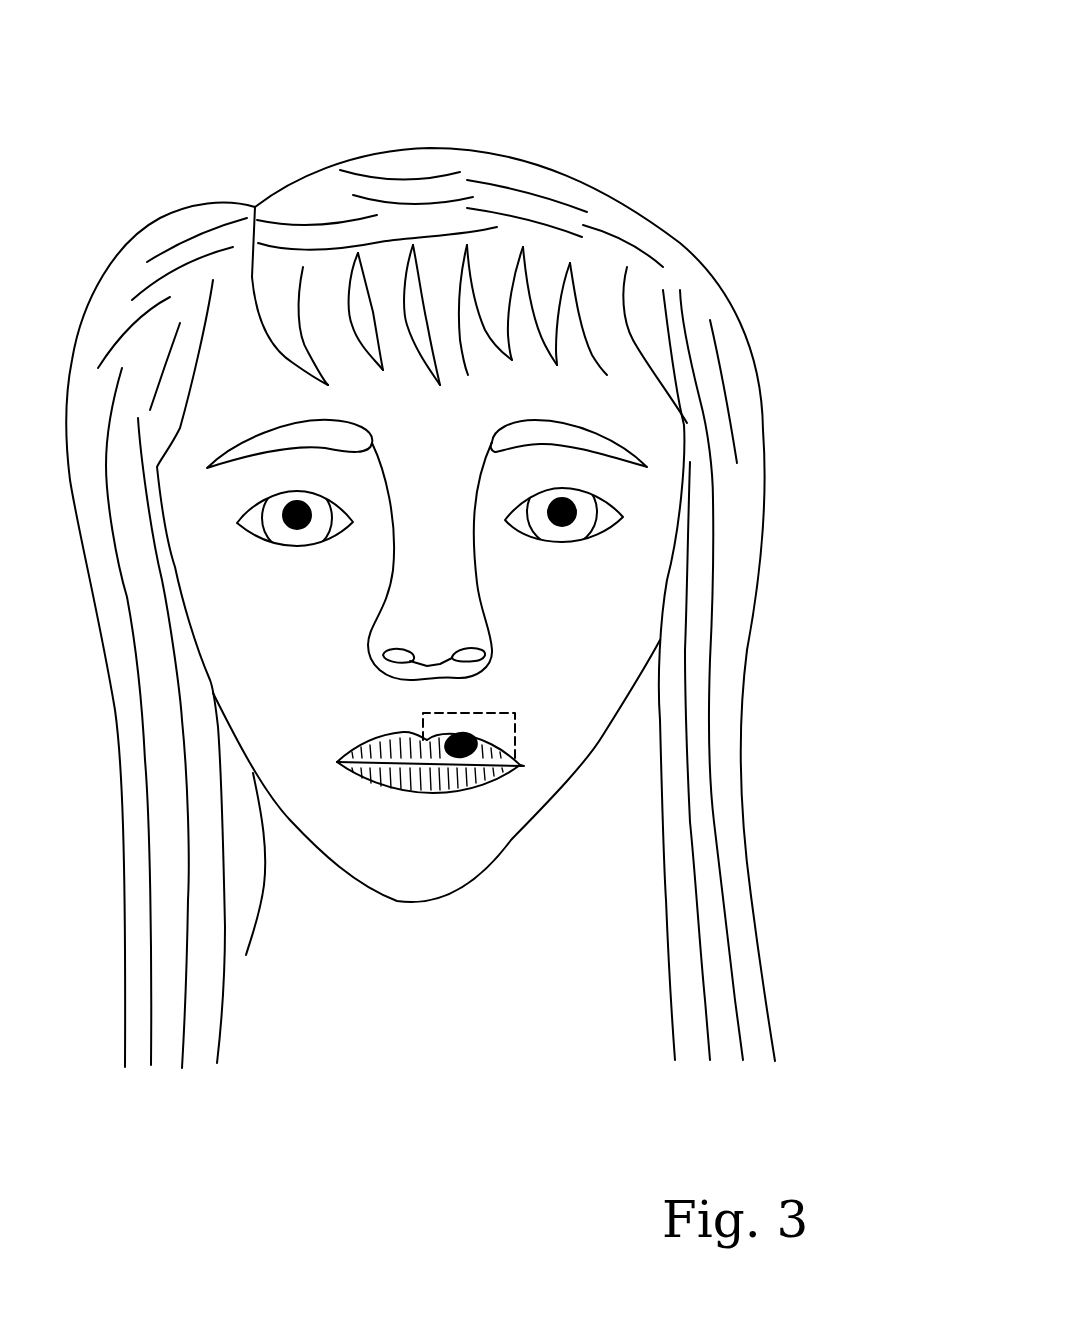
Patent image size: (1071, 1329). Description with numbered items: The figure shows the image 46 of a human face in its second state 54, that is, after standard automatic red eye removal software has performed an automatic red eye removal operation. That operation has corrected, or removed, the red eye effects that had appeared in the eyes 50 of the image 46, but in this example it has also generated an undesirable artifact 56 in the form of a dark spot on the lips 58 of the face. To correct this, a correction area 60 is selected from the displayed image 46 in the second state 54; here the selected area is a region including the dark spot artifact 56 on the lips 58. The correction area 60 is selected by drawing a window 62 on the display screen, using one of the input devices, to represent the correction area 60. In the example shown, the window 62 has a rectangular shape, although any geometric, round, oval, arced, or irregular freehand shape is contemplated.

The image 46 is at (732, 173).
The second state 54 is at (788, 441).
The eyes 50 is at (237, 523).
The artifact 56 is at (509, 768).
The lips 58 is at (365, 783).
The correction area 60 is at (496, 738).
The window 62 is at (495, 713).